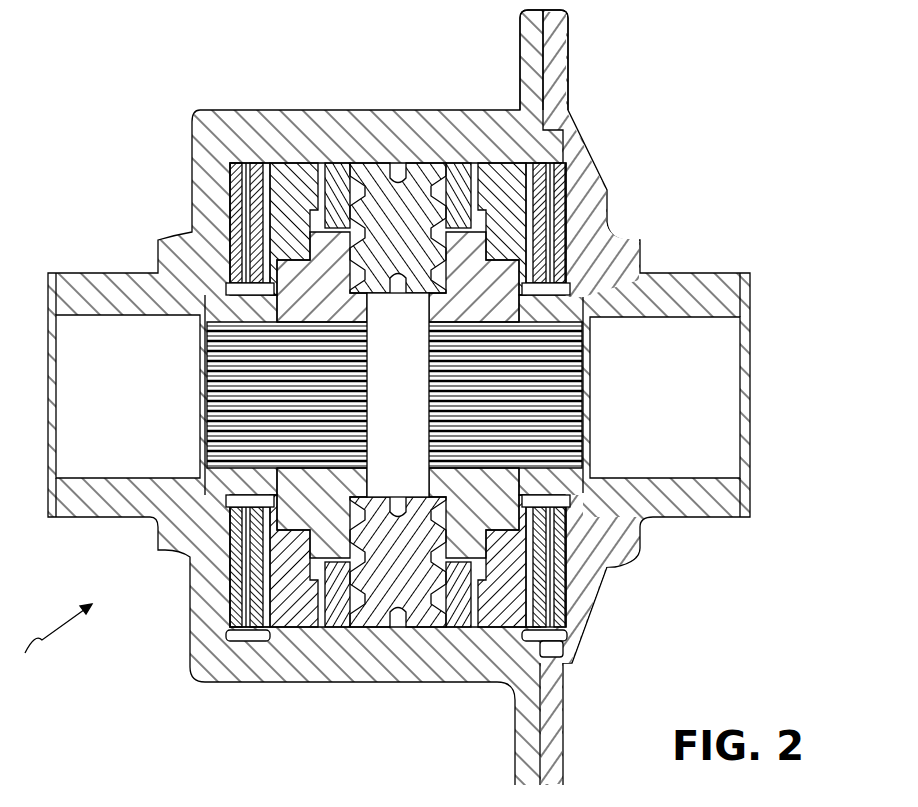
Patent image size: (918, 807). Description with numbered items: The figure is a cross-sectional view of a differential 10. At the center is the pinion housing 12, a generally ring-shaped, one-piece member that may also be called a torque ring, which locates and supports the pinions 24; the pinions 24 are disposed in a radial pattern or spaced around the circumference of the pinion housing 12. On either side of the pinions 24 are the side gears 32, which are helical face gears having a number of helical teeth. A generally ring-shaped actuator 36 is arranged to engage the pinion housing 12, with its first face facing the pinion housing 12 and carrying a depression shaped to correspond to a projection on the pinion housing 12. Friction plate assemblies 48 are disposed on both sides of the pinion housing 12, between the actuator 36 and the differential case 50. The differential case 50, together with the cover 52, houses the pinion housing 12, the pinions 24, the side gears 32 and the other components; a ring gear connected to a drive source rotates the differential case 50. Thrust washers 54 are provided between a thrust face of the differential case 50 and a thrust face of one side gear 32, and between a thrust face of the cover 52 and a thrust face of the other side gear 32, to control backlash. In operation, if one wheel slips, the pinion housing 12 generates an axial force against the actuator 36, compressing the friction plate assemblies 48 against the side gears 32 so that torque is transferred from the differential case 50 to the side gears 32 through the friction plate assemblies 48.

The differential 10 is at (51, 642).
The pinion housing 12 is at (328, 625).
The pinion 24 is at (412, 622).
The side gear 32 is at (287, 518).
The actuator 36 is at (285, 620).
The friction plate assembly 48 is at (247, 643).
The differential case 50 is at (207, 122).
The cover 52 is at (570, 37).
The thrust washer 54 is at (197, 302).